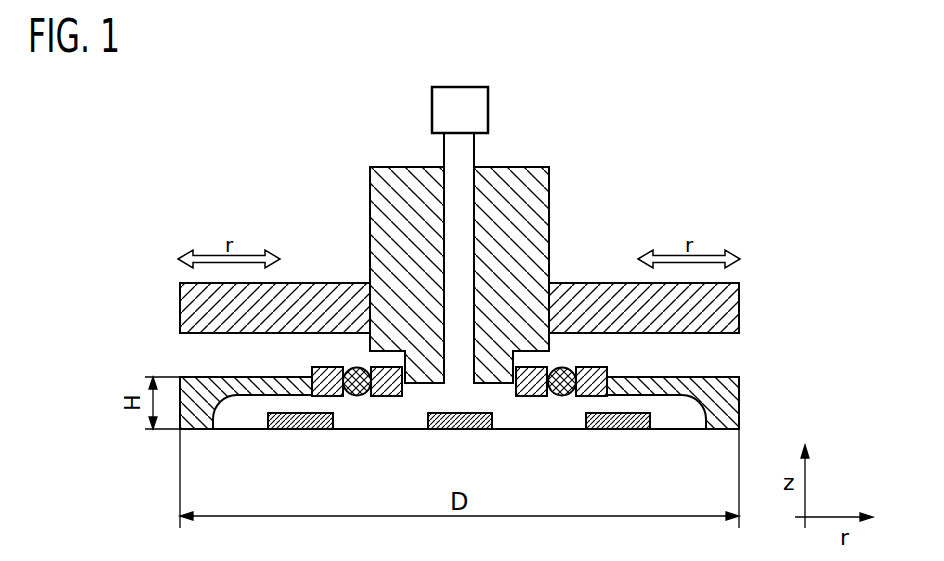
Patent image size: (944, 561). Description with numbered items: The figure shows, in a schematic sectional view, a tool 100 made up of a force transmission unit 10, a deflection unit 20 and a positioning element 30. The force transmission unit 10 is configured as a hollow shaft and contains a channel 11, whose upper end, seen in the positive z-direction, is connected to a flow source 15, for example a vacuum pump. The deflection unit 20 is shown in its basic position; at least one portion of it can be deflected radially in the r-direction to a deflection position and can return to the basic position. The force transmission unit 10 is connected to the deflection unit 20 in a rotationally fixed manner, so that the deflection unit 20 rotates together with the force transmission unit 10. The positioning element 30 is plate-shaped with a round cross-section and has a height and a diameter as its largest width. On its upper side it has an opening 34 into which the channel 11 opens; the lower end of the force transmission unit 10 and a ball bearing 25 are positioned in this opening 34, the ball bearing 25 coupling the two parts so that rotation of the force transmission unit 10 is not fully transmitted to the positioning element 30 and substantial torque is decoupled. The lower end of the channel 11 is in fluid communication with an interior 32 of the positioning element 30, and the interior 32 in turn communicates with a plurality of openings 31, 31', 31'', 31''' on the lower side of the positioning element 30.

The tool 100 is at (325, 100).
The force transmission unit 10 is at (370, 213).
The channel 11 is at (455, 210).
The flow source 15 is at (475, 129).
The deflection unit 20 is at (202, 306).
The ball bearing 25 is at (612, 368).
The positioning element 30 is at (740, 405).
The opening 31 is at (421, 457).
The opening 31' is at (289, 457).
The opening 31'' is at (605, 457).
The opening 31''' is at (684, 460).
The interior 32 is at (256, 408).
The opening 34 is at (459, 377).